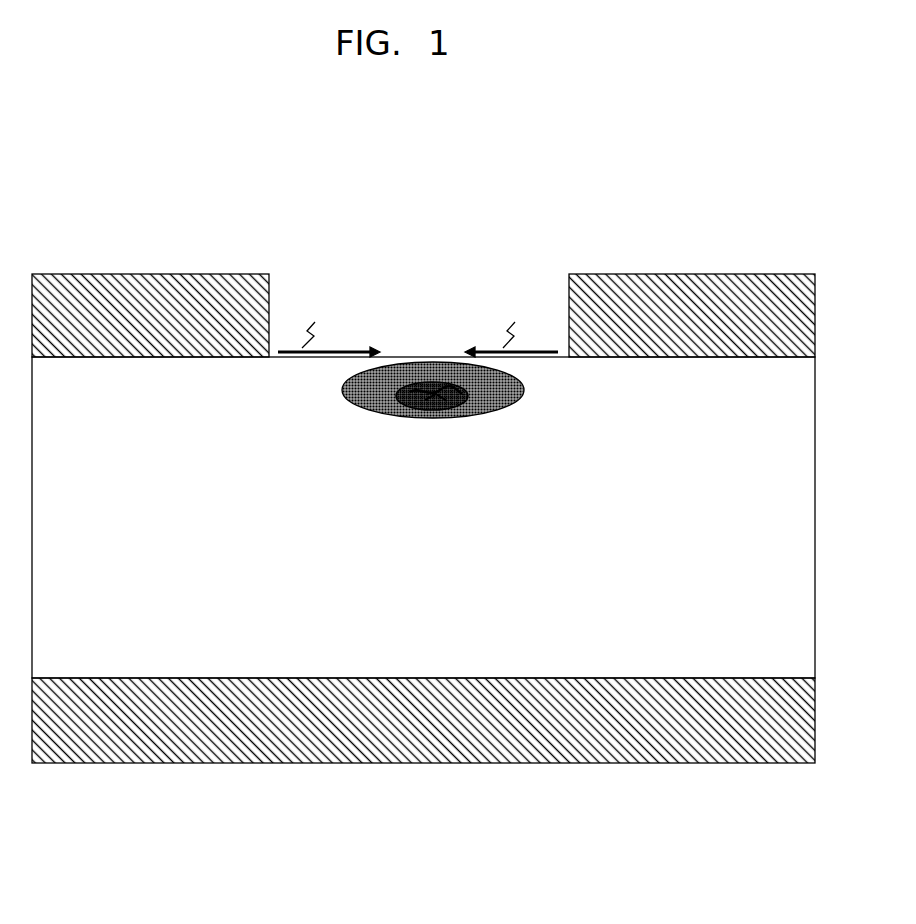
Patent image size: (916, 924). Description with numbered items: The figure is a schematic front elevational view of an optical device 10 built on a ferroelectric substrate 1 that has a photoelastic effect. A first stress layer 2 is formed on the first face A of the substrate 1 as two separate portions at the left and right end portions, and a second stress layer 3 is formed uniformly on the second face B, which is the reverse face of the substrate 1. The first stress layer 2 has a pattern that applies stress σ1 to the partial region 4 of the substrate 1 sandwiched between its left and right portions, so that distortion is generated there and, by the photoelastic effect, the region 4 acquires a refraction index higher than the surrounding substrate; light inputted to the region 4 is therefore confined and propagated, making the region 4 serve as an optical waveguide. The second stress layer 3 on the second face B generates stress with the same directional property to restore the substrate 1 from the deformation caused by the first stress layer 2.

The ferroelectric substrate 1 is at (801, 483).
The first stress layer 2 is at (693, 274).
The second stress layer 3 is at (729, 733).
The partial region 4 is at (525, 390).
The optical device 10 is at (469, 525).
The first face A is at (438, 350).
The second face B is at (388, 679).